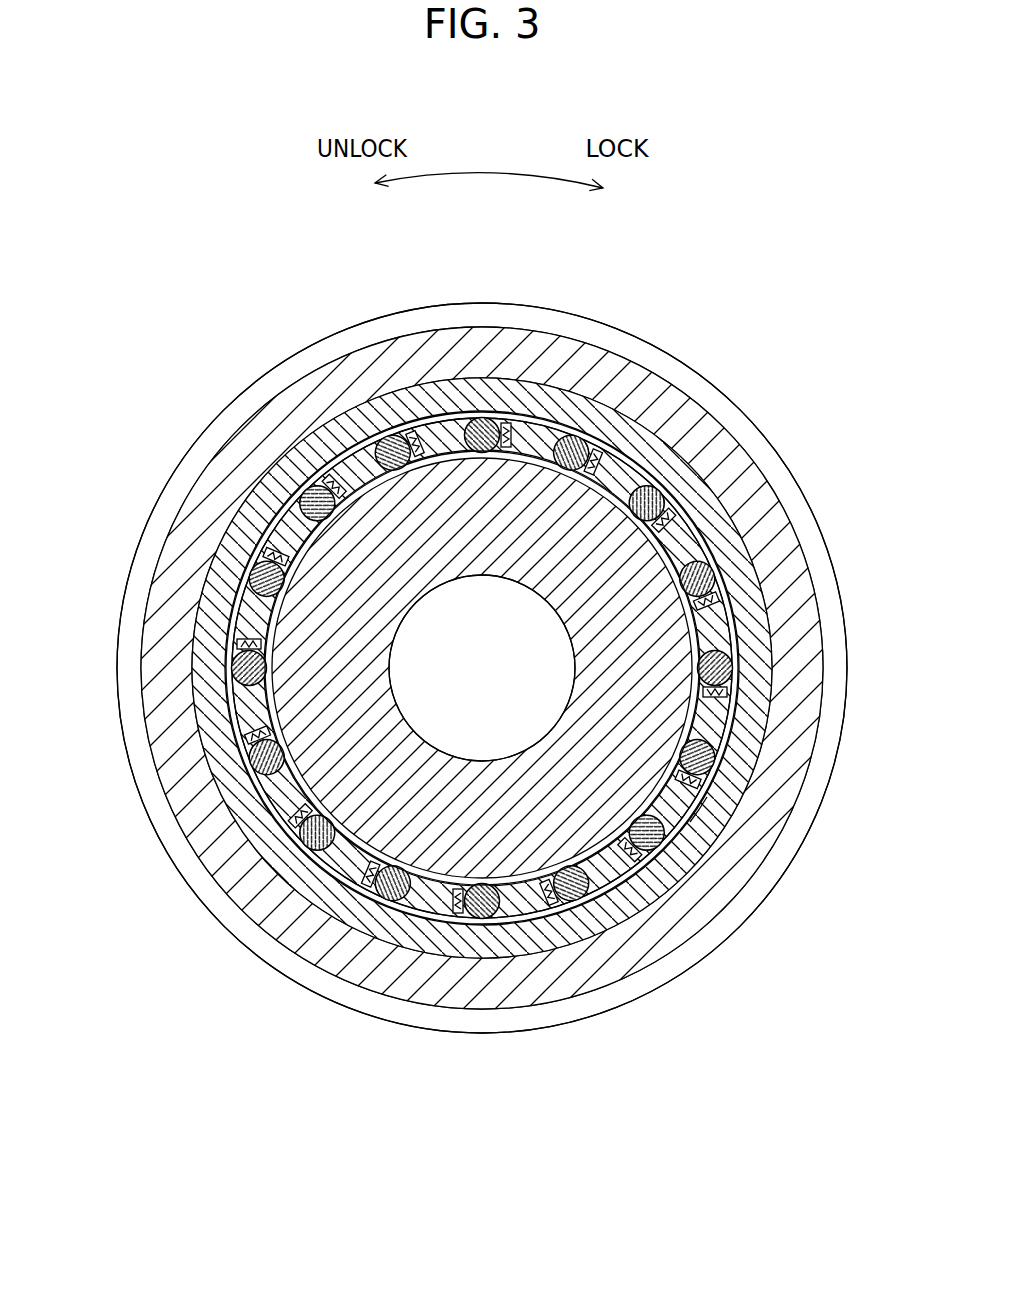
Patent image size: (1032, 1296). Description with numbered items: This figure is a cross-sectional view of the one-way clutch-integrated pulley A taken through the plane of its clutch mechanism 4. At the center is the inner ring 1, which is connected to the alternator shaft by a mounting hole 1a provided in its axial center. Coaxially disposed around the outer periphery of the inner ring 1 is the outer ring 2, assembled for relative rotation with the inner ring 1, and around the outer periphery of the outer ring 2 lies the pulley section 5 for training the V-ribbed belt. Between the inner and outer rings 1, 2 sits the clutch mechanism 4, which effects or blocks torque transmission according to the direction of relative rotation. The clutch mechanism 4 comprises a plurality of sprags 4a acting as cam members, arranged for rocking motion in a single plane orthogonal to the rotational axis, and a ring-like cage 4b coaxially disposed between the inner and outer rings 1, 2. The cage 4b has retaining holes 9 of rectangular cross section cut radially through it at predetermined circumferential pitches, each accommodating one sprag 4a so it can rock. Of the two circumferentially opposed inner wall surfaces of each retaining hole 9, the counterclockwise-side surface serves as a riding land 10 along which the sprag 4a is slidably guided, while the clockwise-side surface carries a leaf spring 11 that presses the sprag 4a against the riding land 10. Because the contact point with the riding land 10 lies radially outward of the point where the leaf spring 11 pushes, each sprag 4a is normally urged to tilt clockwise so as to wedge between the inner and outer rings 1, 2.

The one-way clutch-integrated pulley A is at (131, 249).
The inner ring 1 is at (760, 487).
The mounting hole 1a is at (470, 681).
The outer ring 2 is at (700, 472).
The clutch mechanism 4 is at (628, 455).
The sprag 4a is at (372, 445).
The cage 4b is at (710, 803).
The pulley section 5 is at (250, 384).
The retaining hole 9 is at (505, 440).
The riding land 10 is at (340, 430).
The leaf spring 11 is at (384, 425).